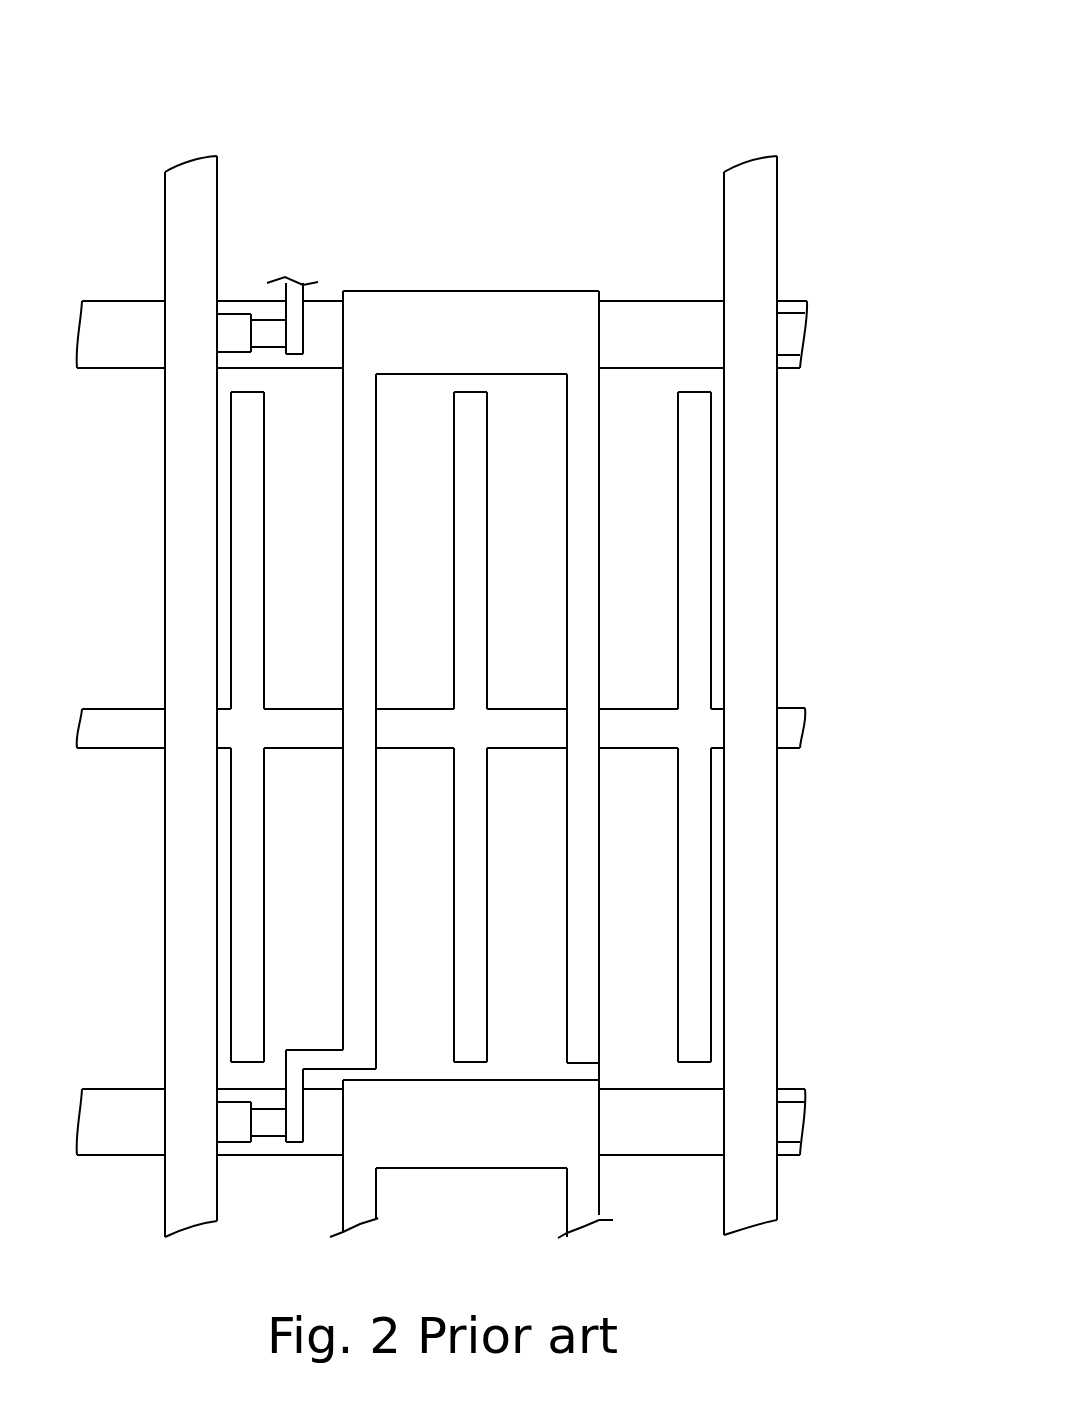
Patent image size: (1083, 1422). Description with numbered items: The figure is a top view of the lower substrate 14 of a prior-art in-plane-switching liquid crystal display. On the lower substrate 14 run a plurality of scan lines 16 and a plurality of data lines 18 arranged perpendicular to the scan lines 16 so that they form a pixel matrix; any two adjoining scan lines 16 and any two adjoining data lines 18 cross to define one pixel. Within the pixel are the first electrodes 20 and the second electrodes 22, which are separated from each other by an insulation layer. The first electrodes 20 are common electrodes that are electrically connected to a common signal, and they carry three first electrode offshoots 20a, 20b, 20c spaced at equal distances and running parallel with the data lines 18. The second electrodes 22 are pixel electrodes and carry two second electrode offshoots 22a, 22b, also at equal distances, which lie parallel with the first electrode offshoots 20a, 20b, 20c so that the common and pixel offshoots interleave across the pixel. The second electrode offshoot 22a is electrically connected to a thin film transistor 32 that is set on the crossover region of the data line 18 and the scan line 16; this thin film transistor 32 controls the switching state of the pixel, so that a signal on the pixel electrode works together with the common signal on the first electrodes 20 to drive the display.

The lower substrate 14 is at (693, 58).
The scan lines 16 is at (672, 322).
The data lines 18 is at (183, 1198).
The first electrodes 20 is at (793, 734).
The first electrode offshoot 20a is at (252, 452).
The first electrode offshoot 20b is at (472, 553).
The first electrode offshoot 20c is at (698, 643).
The second electrodes 22 is at (461, 316).
The second electrode offshoot 22a is at (357, 840).
The second electrode offshoot 22b is at (583, 962).
The thin film transistor 32 is at (278, 1175).